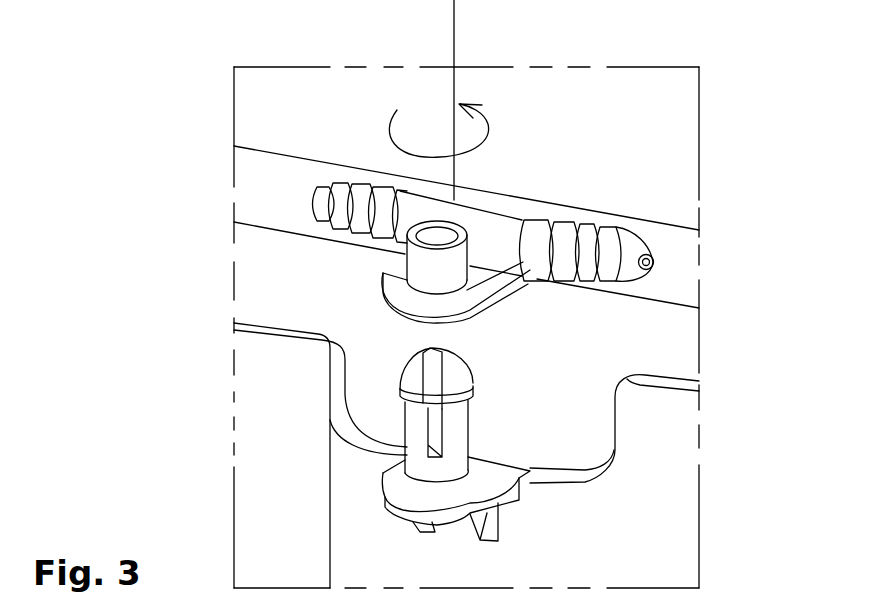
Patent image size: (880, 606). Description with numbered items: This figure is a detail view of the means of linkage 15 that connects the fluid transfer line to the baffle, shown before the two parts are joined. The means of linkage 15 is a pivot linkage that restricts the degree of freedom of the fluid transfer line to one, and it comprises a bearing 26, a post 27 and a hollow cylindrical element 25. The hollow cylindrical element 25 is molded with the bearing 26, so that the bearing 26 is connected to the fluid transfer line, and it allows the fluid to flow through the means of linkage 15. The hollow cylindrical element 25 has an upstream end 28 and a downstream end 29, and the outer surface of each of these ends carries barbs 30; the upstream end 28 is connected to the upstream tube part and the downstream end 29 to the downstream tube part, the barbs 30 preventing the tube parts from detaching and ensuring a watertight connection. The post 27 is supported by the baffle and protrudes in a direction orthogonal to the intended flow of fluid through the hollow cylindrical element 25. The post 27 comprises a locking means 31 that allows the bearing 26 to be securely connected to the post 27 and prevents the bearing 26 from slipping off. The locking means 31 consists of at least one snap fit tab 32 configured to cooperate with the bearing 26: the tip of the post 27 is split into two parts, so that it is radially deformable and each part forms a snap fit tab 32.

The means of linkage 15 is at (180, 362).
The hollow cylindrical element 25 is at (509, 222).
The bearing 26 is at (418, 262).
The post 27 is at (503, 427).
The upstream end 28 is at (323, 184).
The downstream end 29 is at (614, 232).
The barbs 30 is at (403, 192).
The locking means 31 is at (418, 427).
The snap fit tab 32 is at (457, 381).